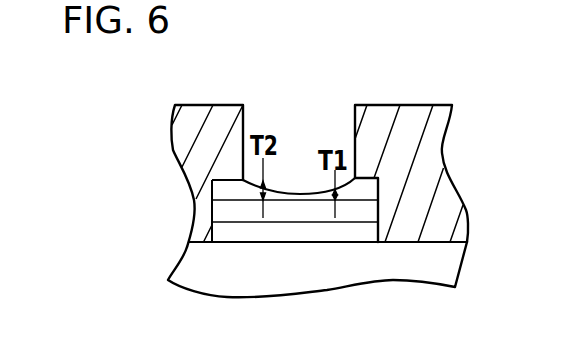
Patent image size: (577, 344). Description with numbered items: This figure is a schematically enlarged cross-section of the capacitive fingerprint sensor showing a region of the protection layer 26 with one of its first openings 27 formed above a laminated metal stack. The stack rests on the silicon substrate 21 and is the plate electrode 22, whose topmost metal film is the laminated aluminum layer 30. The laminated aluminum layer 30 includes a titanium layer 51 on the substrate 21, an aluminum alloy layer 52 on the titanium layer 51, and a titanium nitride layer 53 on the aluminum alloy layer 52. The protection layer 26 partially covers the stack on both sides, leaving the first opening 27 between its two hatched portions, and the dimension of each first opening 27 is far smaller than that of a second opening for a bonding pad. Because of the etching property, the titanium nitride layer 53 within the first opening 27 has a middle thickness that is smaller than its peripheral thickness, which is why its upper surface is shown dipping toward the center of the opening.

The silicon substrate 21 is at (448, 261).
The plate electrode 22 is at (113, 247).
The protection layer 26 is at (453, 203).
The first opening 27 is at (300, 143).
The laminated aluminum layer 30 is at (219, 212).
The titanium layer 51 is at (218, 234).
The aluminum alloy layer 52 is at (218, 214).
The titanium nitride layer 53 is at (217, 185).